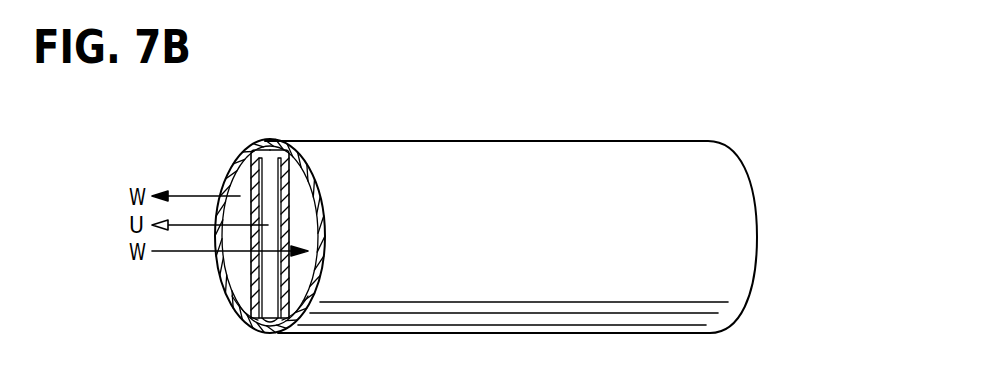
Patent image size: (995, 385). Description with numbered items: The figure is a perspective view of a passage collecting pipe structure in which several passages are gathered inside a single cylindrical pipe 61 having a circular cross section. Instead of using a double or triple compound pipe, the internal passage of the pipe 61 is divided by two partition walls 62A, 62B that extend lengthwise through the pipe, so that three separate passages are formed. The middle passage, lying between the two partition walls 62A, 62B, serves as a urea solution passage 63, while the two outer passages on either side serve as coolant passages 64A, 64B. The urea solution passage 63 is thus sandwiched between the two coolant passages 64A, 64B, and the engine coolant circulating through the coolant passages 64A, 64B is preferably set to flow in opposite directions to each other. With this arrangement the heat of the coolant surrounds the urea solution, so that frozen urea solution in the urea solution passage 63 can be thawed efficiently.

The cylindrical pipe 61 is at (237, 180).
The partition wall 62A is at (261, 150).
The partition wall 62B is at (289, 158).
The urea solution passage 63 is at (264, 300).
The coolant passage 64A is at (241, 292).
The coolant passage 64B is at (305, 300).